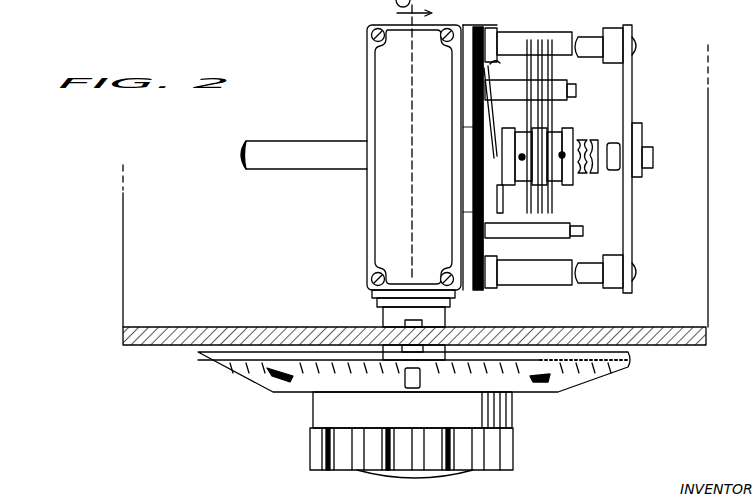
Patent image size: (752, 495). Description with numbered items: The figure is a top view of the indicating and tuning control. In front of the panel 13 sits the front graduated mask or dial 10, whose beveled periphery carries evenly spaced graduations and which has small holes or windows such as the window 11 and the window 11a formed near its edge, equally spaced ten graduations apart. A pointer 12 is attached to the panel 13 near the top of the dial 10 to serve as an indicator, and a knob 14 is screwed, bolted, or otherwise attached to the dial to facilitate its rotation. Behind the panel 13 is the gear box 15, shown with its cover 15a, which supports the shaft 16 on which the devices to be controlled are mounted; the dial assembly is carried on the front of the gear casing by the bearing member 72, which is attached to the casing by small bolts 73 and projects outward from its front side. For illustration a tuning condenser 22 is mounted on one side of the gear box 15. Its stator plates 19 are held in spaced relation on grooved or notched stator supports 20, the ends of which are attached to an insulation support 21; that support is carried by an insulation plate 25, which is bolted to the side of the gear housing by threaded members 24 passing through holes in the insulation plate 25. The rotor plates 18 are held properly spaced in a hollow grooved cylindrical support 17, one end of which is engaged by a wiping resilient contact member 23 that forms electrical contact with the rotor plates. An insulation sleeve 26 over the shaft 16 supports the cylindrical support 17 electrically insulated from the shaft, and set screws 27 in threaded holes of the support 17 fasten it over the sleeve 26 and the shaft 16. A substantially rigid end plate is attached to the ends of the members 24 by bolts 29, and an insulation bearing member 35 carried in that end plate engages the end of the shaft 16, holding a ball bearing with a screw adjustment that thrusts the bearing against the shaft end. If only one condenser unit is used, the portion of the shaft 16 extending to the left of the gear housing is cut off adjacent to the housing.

The front graduated mask or dial 10 is at (240, 367).
The window 11 is at (423, 388).
The window 11a is at (280, 375).
The pointer 12 is at (380, 367).
The panel 13 is at (150, 333).
The knob 14 is at (317, 447).
The gear box 15 is at (383, 194).
The housing cover 15a is at (403, 90).
The shaft 16 is at (300, 163).
The hollow grooved cylindrical support 17 is at (562, 126).
The rotor plates 18 is at (555, 207).
The stator plates 19 is at (553, 214).
The stator supports 20 is at (578, 90).
The insulation support 21 is at (490, 208).
The tuning condenser 22 is at (480, 90).
The wiping resilient contact member 23 is at (478, 127).
The members 24 is at (562, 40).
The insulation plate or panel 25 is at (476, 182).
The sleeve 26 is at (590, 137).
The set screws 27 is at (508, 202).
The bolts 29 is at (630, 40).
The insulation bearing member 35 is at (653, 158).
The bearing member 72 is at (372, 293).
The small bolts 73 is at (377, 304).